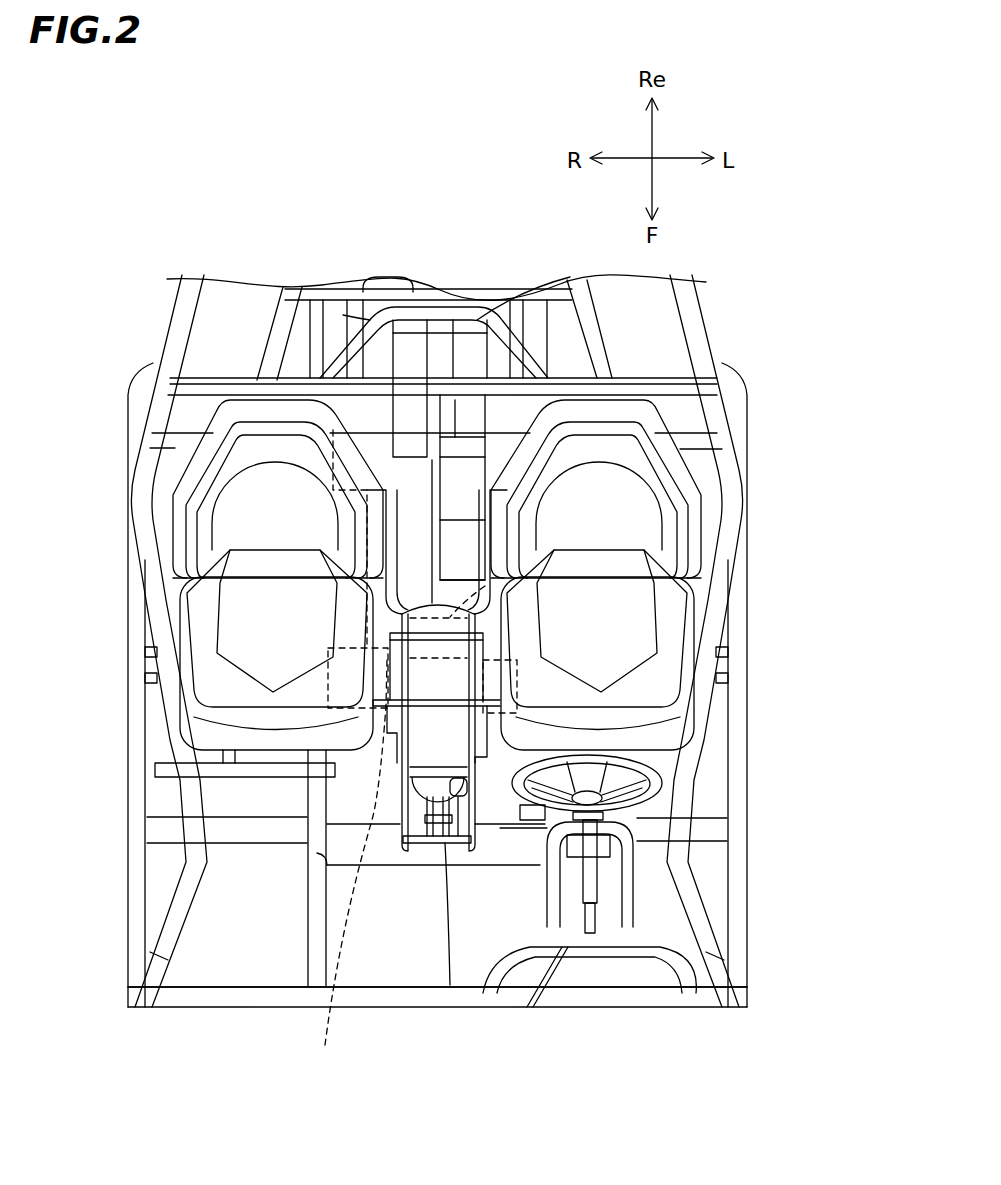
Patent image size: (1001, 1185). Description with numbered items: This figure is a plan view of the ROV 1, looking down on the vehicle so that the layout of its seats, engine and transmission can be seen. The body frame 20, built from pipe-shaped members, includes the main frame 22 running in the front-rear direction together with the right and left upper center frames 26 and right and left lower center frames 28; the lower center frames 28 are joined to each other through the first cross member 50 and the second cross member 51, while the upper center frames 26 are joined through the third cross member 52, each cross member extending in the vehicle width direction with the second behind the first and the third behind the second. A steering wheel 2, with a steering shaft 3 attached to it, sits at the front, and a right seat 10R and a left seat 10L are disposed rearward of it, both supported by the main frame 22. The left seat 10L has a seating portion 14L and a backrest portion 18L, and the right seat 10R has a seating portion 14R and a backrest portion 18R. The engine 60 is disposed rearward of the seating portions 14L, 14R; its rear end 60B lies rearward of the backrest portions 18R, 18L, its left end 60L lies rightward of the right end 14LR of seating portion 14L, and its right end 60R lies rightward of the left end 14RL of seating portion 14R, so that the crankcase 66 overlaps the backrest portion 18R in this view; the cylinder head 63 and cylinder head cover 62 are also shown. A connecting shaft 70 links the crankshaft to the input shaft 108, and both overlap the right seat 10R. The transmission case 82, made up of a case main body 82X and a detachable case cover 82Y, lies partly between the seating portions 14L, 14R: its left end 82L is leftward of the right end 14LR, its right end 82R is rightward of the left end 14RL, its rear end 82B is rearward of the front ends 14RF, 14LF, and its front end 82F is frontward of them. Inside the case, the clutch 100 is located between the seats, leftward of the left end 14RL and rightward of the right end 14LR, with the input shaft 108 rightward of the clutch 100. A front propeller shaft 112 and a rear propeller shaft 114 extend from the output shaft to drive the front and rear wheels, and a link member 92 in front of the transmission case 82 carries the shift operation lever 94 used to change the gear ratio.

The ROV 1 is at (719, 283).
The steering wheel 2 is at (660, 787).
The steering shaft 3 is at (600, 912).
The right seat 10R is at (218, 420).
The left seat 10L is at (655, 420).
The seating portion 14R is at (253, 643).
The seating portion 14L is at (647, 640).
The left end 14RL is at (265, 732).
The right end 14LR is at (525, 697).
The front end 14RF is at (175, 770).
The front end 14LF is at (662, 779).
The backrest portion 18R is at (245, 505).
The backrest portion 18L is at (642, 497).
The body frame 20 is at (702, 324).
The main frame 22 is at (310, 893).
The upper center frames 26 is at (190, 870).
The lower center frames 28 is at (128, 914).
The first cross member 50 is at (400, 993).
The second cross member 51 is at (477, 350).
The third cross member 52 is at (237, 387).
The engine 60 is at (334, 319).
The right end 60R is at (295, 400).
The left end 60L is at (500, 410).
The rear end 60B is at (380, 278).
The cylinder head cover 62 is at (457, 437).
The cylinder head 63 is at (413, 350).
The crankcase 66 is at (364, 332).
The connecting shaft 70 is at (250, 578).
The transmission case 82 is at (492, 729).
The rear end 82B is at (453, 577).
The front end 82F is at (417, 840).
The case main body 82X is at (435, 747).
The case cover 82Y is at (365, 598).
The right end 82R is at (330, 680).
The left end 82L is at (500, 657).
The link member 92 is at (437, 843).
The shift operation lever 94 is at (457, 843).
The clutch 100 is at (485, 586).
The input shaft 108 is at (345, 879).
The front propeller shaft 112 is at (450, 985).
The rear propeller shaft 114 is at (565, 470).